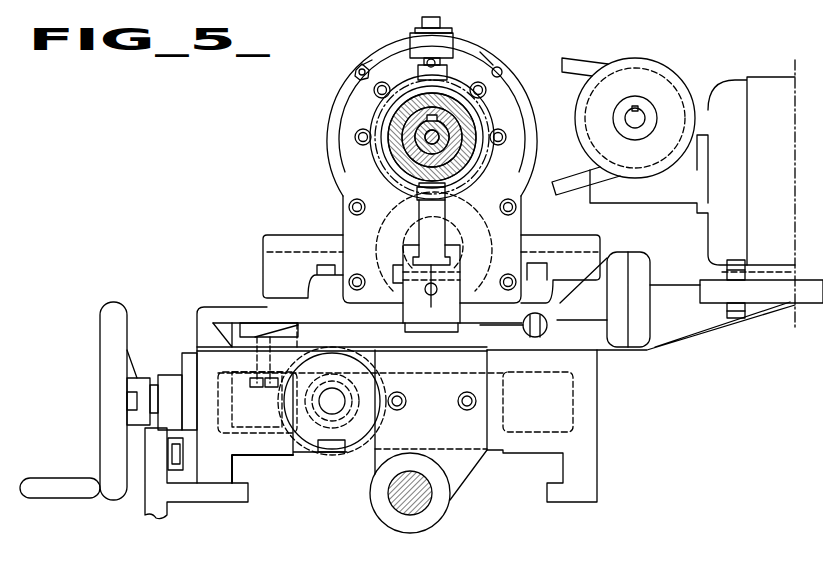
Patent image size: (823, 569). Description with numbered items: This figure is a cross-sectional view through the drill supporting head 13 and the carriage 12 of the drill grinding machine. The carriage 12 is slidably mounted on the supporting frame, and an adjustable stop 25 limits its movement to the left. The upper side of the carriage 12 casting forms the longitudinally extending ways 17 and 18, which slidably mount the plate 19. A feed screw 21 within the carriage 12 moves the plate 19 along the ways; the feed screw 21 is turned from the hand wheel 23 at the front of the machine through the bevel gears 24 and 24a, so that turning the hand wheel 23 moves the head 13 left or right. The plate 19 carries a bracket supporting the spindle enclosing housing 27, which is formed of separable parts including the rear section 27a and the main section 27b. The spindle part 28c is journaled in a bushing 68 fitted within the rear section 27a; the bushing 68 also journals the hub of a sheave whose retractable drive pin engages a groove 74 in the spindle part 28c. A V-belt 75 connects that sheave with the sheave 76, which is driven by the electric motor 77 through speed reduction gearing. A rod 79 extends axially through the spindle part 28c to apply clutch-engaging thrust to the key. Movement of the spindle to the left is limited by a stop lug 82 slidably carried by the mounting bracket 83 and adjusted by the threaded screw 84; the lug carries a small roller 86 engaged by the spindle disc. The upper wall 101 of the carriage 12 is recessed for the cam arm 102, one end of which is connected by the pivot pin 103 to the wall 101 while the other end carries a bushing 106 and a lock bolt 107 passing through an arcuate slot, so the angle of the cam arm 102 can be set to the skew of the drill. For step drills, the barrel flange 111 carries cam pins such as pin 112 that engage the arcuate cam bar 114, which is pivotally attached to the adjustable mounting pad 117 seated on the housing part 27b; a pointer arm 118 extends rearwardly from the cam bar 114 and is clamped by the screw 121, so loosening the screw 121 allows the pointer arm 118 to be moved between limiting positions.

The carriage 12 is at (597, 401).
The drill supporting head 13 is at (330, 101).
The longitudinally extending way 17 is at (223, 325).
The longitudinally extending way 18 is at (521, 362).
The plate 19 is at (197, 310).
The feed screw 21 is at (344, 453).
The hand wheel 23 is at (115, 302).
The bevel gear 24 is at (356, 449).
The bevel gear 24a is at (298, 453).
The adjustable stop 25 is at (166, 506).
The spindle enclosing housing 27 is at (358, 117).
The rear section of housing 27a is at (463, 125).
The main section of housing 27b is at (349, 82).
The spindle part 28c is at (478, 158).
The bushing 68 is at (405, 147).
The groove 74 is at (462, 52).
The V-belt 75 is at (579, 60).
The sheave 76 is at (667, 74).
The electric motor 77 is at (752, 76).
The rod 79 is at (470, 156).
The stop lug 82 is at (421, 217).
The mounting bracket 83 is at (455, 290).
The threaded screw 84 is at (433, 296).
The roller 86 is at (462, 178).
The upper wall of carriage 101 is at (546, 368).
The cam arm 102 is at (338, 334).
The pivot pin 103 is at (472, 334).
The bushing 106 is at (255, 330).
The lock bolt 107 is at (262, 362).
The flange 111 is at (328, 138).
The cam pin 112 is at (361, 65).
The arcuate cam bar 114 is at (395, 44).
The adjustable mounting pad 117 is at (448, 108).
The pointer arm 118 is at (455, 38).
The clamp screw 121 is at (427, 24).